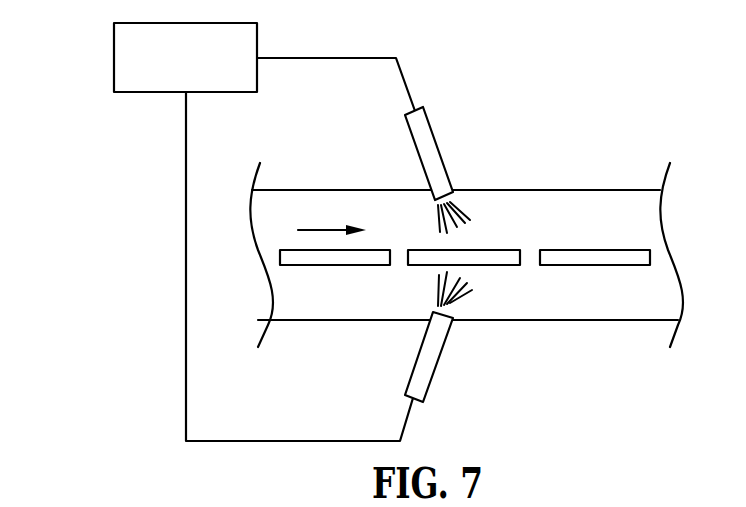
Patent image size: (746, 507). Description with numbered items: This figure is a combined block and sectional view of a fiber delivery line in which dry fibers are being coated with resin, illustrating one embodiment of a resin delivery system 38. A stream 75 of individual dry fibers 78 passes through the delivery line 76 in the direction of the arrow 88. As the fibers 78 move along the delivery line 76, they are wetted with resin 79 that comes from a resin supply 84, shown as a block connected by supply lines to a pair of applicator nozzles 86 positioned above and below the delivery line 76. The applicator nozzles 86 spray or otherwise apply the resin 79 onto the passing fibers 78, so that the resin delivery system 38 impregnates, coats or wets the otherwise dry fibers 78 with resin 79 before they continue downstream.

The resin supply 84 is at (114, 52).
The resin delivery system 38 is at (588, 96).
The applicator nozzles 86 is at (427, 145).
The delivery line 76 is at (528, 208).
The stream 75 is at (590, 230).
The fibers 78 is at (623, 265).
The arrow 88 is at (323, 230).
The resin 79 is at (484, 297).